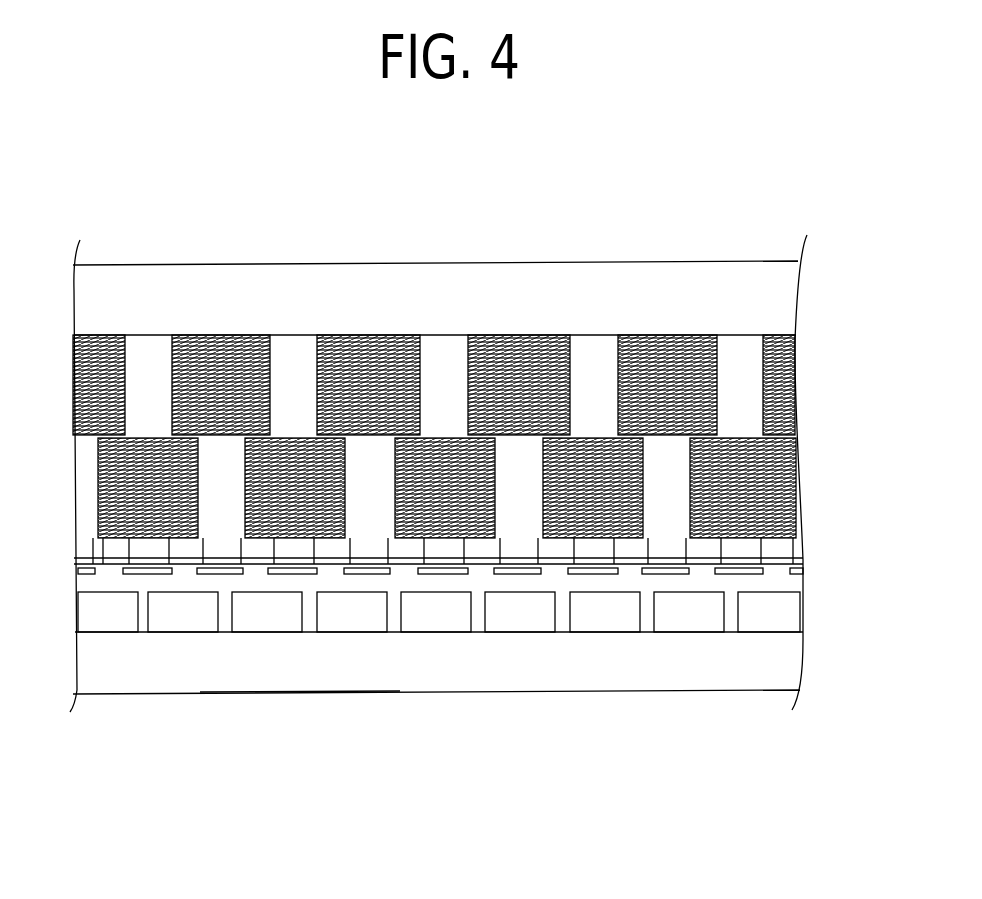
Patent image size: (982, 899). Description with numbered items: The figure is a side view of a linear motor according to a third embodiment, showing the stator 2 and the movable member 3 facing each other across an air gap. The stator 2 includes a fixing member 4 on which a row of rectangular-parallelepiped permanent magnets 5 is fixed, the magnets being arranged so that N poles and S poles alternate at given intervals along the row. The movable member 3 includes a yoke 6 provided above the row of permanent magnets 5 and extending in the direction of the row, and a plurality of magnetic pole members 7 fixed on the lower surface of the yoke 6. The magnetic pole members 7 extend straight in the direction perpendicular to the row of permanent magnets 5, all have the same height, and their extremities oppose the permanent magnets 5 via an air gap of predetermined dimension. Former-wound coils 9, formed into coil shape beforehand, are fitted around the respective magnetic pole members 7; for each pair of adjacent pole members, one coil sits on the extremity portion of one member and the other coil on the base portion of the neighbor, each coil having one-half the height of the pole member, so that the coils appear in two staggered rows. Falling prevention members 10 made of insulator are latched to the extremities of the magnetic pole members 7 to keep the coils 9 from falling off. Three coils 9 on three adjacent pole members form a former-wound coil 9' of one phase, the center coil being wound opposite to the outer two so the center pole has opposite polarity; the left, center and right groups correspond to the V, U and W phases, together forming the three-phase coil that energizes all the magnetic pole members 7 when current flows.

The stator 2 is at (302, 695).
The movable member 3 is at (123, 265).
The fixing member 4 is at (222, 669).
The permanent magnets 5 is at (122, 635).
The yoke 6 is at (551, 277).
The magnetic pole members 7 is at (745, 365).
The former-wound coils 9 is at (434, 496).
The former-wound coil of one phase 9' is at (456, 493).
The falling prevention members 10 is at (803, 540).